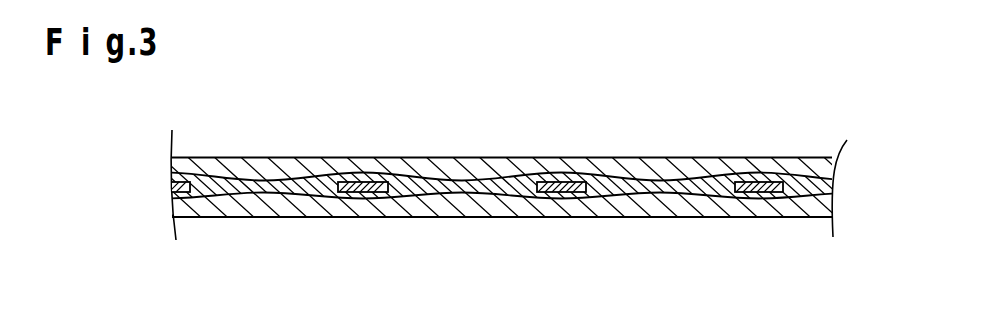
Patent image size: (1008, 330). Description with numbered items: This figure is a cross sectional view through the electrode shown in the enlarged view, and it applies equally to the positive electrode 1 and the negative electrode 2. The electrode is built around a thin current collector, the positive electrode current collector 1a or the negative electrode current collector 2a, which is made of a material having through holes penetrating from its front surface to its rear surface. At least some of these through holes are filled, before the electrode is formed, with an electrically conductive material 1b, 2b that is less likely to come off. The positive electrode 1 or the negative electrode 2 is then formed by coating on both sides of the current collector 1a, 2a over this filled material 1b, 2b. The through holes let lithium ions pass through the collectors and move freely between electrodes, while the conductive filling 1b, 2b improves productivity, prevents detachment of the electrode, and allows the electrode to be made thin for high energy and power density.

The positive electrode 1 is at (467, 168).
The negative electrode 2 is at (518, 190).
The positive electrode current collector 1a is at (333, 217).
The negative electrode current collector 2a is at (502, 247).
The electrically conductive material 1b is at (530, 180).
The electrically conductive material 2b is at (518, 166).